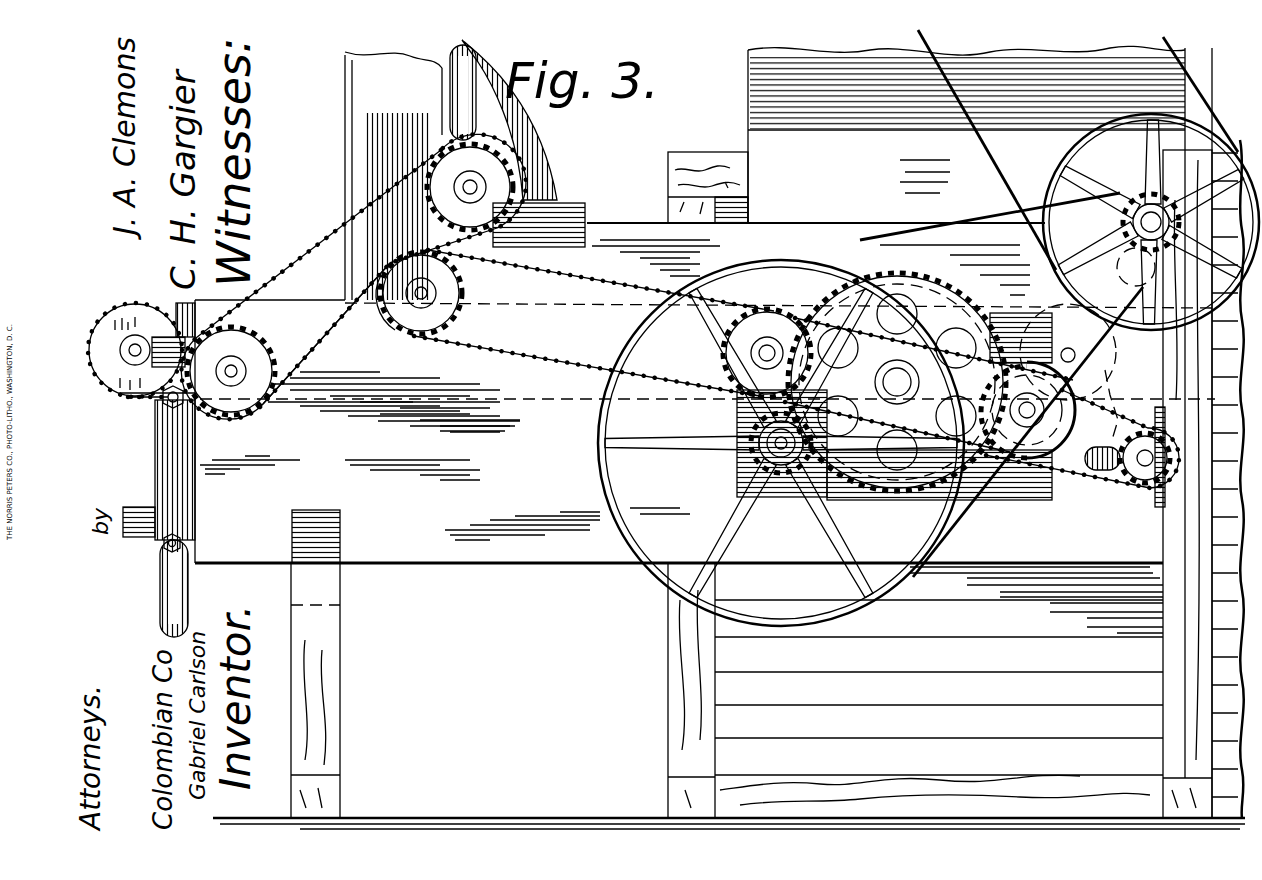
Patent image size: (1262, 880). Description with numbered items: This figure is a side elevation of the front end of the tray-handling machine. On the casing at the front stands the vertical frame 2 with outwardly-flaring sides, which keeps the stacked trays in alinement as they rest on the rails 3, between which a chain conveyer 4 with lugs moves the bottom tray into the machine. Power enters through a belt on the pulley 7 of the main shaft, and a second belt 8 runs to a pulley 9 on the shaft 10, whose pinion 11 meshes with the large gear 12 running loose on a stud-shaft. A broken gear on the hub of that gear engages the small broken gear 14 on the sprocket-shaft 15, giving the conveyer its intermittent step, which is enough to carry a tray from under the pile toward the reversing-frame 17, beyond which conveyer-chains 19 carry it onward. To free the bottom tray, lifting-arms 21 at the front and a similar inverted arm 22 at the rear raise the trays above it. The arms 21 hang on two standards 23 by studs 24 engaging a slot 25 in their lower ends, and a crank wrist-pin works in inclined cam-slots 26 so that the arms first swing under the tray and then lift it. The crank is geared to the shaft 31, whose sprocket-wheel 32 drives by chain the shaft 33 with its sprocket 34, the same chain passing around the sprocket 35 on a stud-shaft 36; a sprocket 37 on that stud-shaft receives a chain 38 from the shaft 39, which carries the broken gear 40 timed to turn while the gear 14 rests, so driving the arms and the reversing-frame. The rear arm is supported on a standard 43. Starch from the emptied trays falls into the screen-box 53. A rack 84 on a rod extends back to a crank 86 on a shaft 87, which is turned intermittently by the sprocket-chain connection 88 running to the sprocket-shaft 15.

The vertical frame 2 is at (393, 176).
The rails 3 is at (190, 317).
The chain conveyer 4 is at (126, 393).
The pulley 7 is at (535, 563).
The second belt 8 is at (860, 240).
The pulley 9 is at (604, 492).
The shaft 10 is at (775, 450).
The pinion 11 is at (793, 497).
The large gear 12 is at (890, 372).
The small broken gear 14 is at (771, 318).
The sprocket-shaft 15 is at (760, 353).
The reversing-frame 17 is at (1047, 182).
The conveyer-chains 19 is at (1125, 399).
The lifting-arms 21 is at (165, 304).
The arm 22 is at (447, 126).
The standards 23 is at (157, 470).
The studs 24 is at (165, 545).
The slot 25 is at (170, 598).
The inclined cam-slots 26 is at (183, 403).
The shaft 31 is at (236, 368).
The sprocket-wheel 32 is at (258, 396).
The shaft 33 is at (478, 186).
The sprocket 34 is at (432, 178).
The sprocket 35 is at (384, 262).
The stud-shaft 36 is at (440, 293).
The sprocket 37 is at (400, 320).
The chain 38 is at (565, 366).
The shaft 39 is at (1036, 410).
The broken gear 40 is at (1060, 332).
The standard 43 is at (508, 150).
The screen-box 53 is at (939, 702).
The rack 84 is at (1165, 498).
The crank 86 is at (1108, 470).
The shaft 87 is at (1150, 456).
The sprocket-chain connection 88 is at (1080, 480).